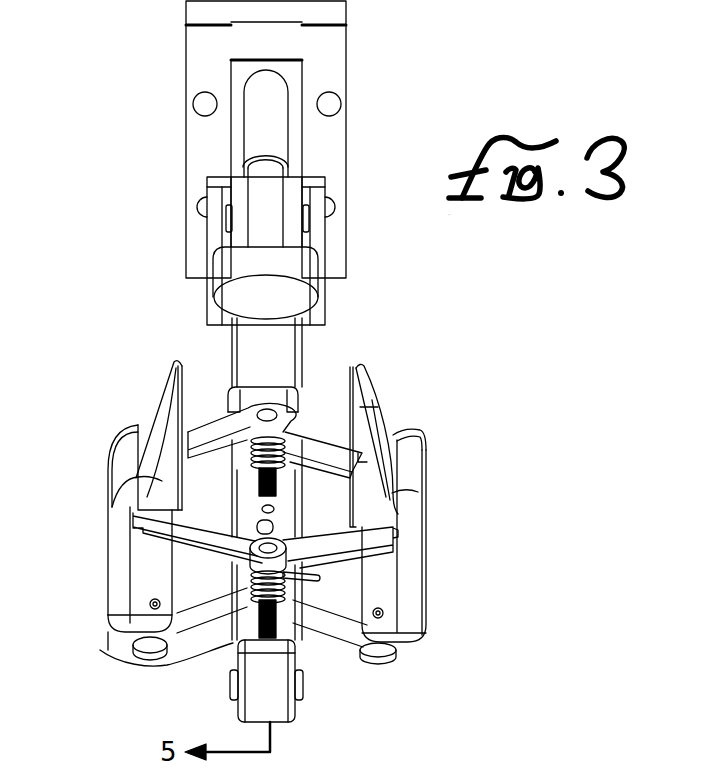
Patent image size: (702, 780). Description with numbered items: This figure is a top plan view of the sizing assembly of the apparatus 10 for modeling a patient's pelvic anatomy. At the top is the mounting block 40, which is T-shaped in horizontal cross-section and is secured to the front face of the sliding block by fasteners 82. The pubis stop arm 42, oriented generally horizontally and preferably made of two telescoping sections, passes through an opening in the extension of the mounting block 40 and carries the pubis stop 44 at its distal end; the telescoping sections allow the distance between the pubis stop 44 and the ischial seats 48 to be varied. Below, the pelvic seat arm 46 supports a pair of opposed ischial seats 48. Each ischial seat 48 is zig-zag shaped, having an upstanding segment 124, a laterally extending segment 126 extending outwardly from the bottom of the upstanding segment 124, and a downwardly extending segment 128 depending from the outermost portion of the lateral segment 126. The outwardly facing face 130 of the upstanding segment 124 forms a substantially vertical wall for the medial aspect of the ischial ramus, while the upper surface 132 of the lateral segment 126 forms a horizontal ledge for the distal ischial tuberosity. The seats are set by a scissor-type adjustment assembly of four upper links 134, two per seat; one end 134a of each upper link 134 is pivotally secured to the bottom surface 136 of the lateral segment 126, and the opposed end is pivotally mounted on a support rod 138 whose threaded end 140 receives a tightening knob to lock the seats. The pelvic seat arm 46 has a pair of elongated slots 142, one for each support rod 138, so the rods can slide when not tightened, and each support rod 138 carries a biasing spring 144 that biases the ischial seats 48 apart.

The apparatus 10 is at (406, 297).
The mounting block 40 is at (354, 93).
The pubis stop arm 42 is at (277, 140).
The pubis stop 44 is at (290, 295).
The pelvic seat arm 46 is at (280, 507).
The ischial seats 48 is at (120, 540).
The fasteners 82 is at (199, 108).
The upstanding segment 124 is at (330, 468).
The laterally extending segment 126 is at (392, 500).
The downwardly extending segment 128 is at (415, 600).
The outwardly facing face 130 is at (372, 412).
The upper surface 132 is at (403, 447).
The ischial seat upper links 134 is at (212, 430).
The end of upper link 134a is at (283, 520).
The bottom surface 136 is at (142, 520).
The support rod 138 is at (180, 482).
The threaded end 140 is at (100, 648).
The elongated slots 142 is at (300, 512).
The biasing spring 144 is at (245, 588).